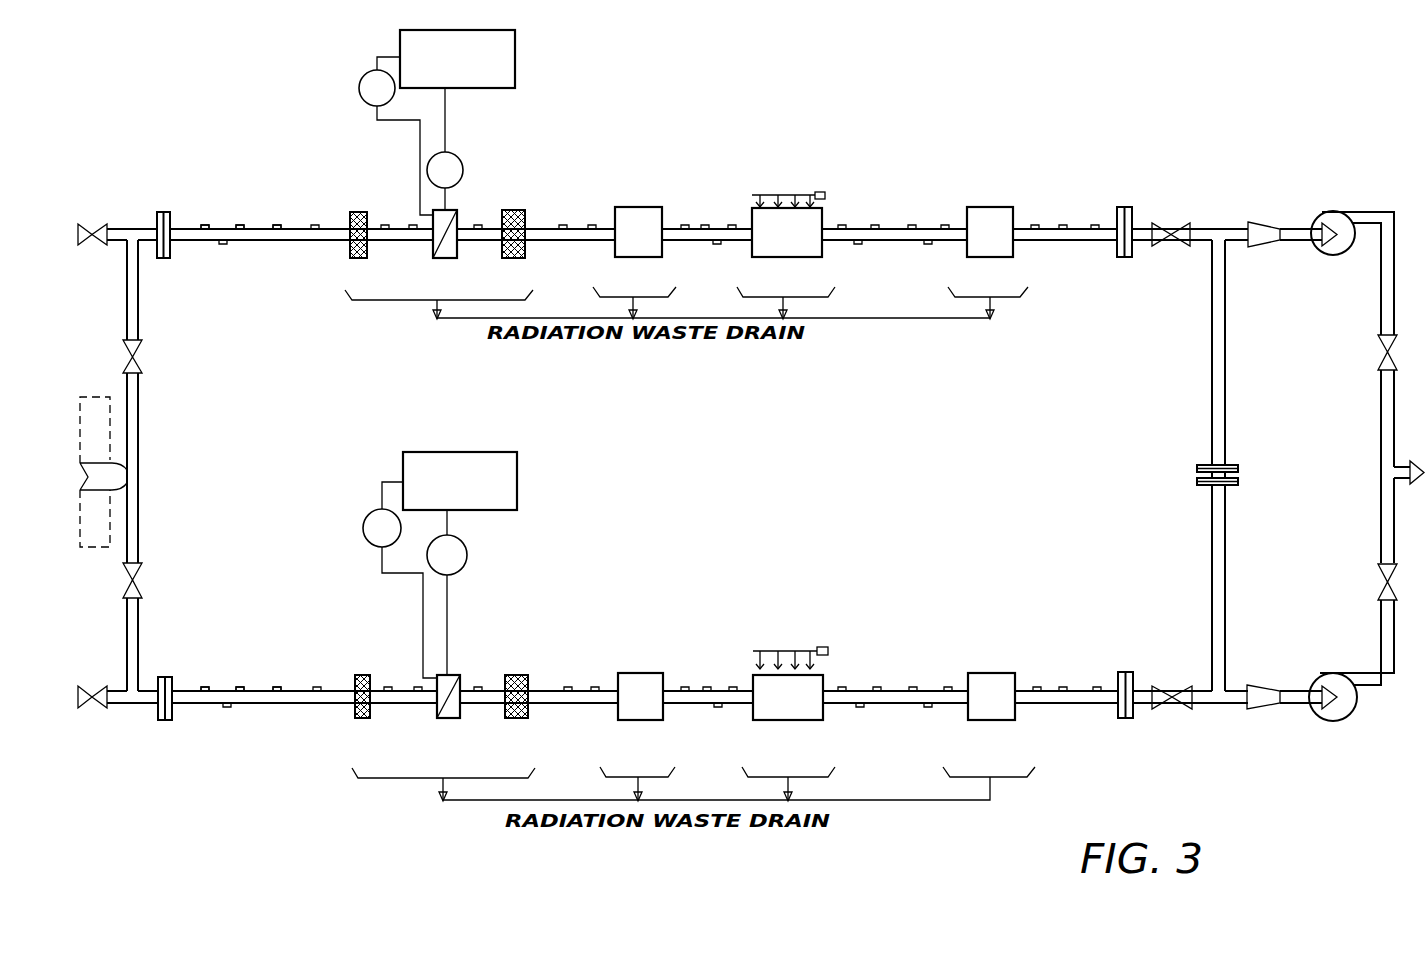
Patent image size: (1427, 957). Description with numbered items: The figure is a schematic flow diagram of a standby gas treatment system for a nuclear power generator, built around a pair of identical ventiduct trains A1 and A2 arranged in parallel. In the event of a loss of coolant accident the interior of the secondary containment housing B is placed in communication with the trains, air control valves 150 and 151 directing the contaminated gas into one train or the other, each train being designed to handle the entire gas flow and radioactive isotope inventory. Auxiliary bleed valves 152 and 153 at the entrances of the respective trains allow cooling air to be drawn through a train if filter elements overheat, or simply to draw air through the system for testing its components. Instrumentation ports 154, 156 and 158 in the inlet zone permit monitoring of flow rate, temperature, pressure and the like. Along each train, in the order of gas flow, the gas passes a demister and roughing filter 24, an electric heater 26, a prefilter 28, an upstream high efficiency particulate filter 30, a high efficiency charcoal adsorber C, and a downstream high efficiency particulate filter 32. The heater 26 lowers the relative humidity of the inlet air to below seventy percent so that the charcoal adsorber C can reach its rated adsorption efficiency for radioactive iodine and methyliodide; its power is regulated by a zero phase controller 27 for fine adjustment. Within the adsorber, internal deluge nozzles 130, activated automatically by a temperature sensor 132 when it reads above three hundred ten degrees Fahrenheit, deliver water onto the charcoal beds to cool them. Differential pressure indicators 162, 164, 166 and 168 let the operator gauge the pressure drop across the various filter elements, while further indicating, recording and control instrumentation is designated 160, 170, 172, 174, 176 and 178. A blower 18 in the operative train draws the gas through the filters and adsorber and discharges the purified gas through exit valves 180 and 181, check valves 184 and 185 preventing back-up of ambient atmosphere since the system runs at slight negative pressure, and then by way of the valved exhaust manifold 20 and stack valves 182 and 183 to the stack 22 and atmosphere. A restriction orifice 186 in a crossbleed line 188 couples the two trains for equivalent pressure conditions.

The blower 18 is at (1338, 211).
The valved exhaust manifold 20 is at (1382, 433).
The stack 22 is at (1410, 477).
The demister and roughing filter 24 is at (354, 259).
The electric heater 26 is at (442, 258).
The zero phase controller 27 is at (467, 77).
The prefilter 28 is at (512, 258).
The upstream high efficiency particulate filter 30 is at (633, 248).
The downstream high efficiency particulate filter 32 is at (985, 248).
The internal nozzles 130 is at (797, 196).
The temperature sensor 132 is at (820, 192).
The air control valve 150 is at (127, 357).
The air control valve 151 is at (127, 583).
The auxiliary bleed valve 152 is at (92, 224).
The auxiliary bleed valve 153 is at (92, 686).
The instrumentation port 154 is at (205, 225).
The instrumentation port 156 is at (240, 225).
The instrumentation port 158 is at (277, 225).
The flow indicator 160 is at (413, 225).
The differential pressure indicator 162 is at (478, 225).
The differential pressure indicator 164 is at (685, 225).
The differential pressure indicator 166 is at (842, 225).
The differential pressure indicator 168 is at (1035, 225).
The indicating, recording and control instrumentation 170 is at (385, 225).
The indicating, recording and control instrumentation 172 is at (703, 225).
The indicating, recording and control instrumentation 174 is at (873, 225).
The indicating, recording and control instrumentation 176 is at (912, 225).
The indicating, recording and control instrumentation 178 is at (1093, 225).
The exit valve 180 is at (1166, 226).
The exit valve 181 is at (1168, 688).
The stack valve 182 is at (1378, 352).
The stack valve 183 is at (1380, 580).
The check valve 184 is at (1262, 230).
The check valve 185 is at (1263, 688).
The restriction orifice 186 is at (1238, 474).
The crossbleed line 188 is at (1212, 392).
The ventiduct train A1 is at (262, 243).
The ventiduct train A2 is at (256, 706).
The secondary containment housing B is at (90, 397).
The high efficiency charcoal adsorber C is at (784, 238).